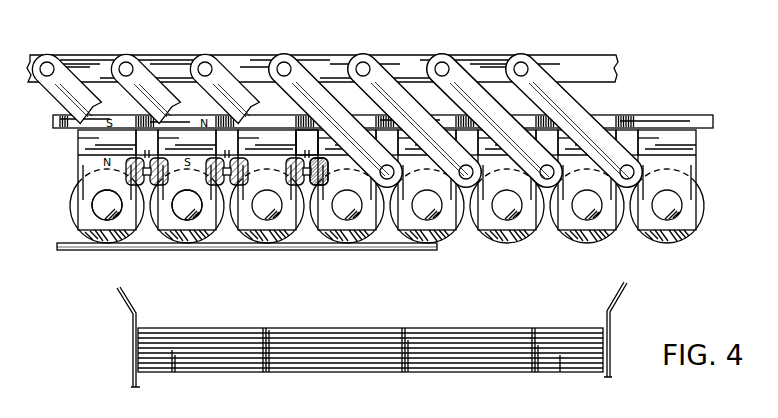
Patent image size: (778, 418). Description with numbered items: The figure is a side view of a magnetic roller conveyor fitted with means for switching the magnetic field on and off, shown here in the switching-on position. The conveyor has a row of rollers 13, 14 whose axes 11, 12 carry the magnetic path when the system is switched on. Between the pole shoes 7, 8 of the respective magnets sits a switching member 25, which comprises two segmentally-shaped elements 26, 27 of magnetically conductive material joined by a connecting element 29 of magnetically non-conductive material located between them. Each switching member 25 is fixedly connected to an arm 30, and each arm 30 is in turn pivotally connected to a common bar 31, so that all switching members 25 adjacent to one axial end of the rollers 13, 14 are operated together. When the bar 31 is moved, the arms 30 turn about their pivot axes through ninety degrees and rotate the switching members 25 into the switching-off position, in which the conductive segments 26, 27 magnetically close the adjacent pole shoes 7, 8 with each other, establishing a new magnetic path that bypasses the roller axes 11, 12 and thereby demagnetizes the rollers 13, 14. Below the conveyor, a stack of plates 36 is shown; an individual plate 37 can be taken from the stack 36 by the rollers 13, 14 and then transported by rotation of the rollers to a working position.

The pole shoe 7 is at (113, 229).
The pole shoe 8 is at (186, 230).
The axis 11 is at (104, 204).
The axis 12 is at (201, 212).
The roller 13 is at (675, 238).
The roller 14 is at (592, 240).
The switching member 25 is at (328, 170).
The segmentally-shaped element 26 is at (284, 152).
The segmentally-shaped element 27 is at (321, 148).
The connecting element 29 is at (316, 160).
The arm 30 is at (70, 94).
The bar 31 is at (245, 67).
The stack of plates 36 is at (263, 362).
The plate 37 is at (75, 250).